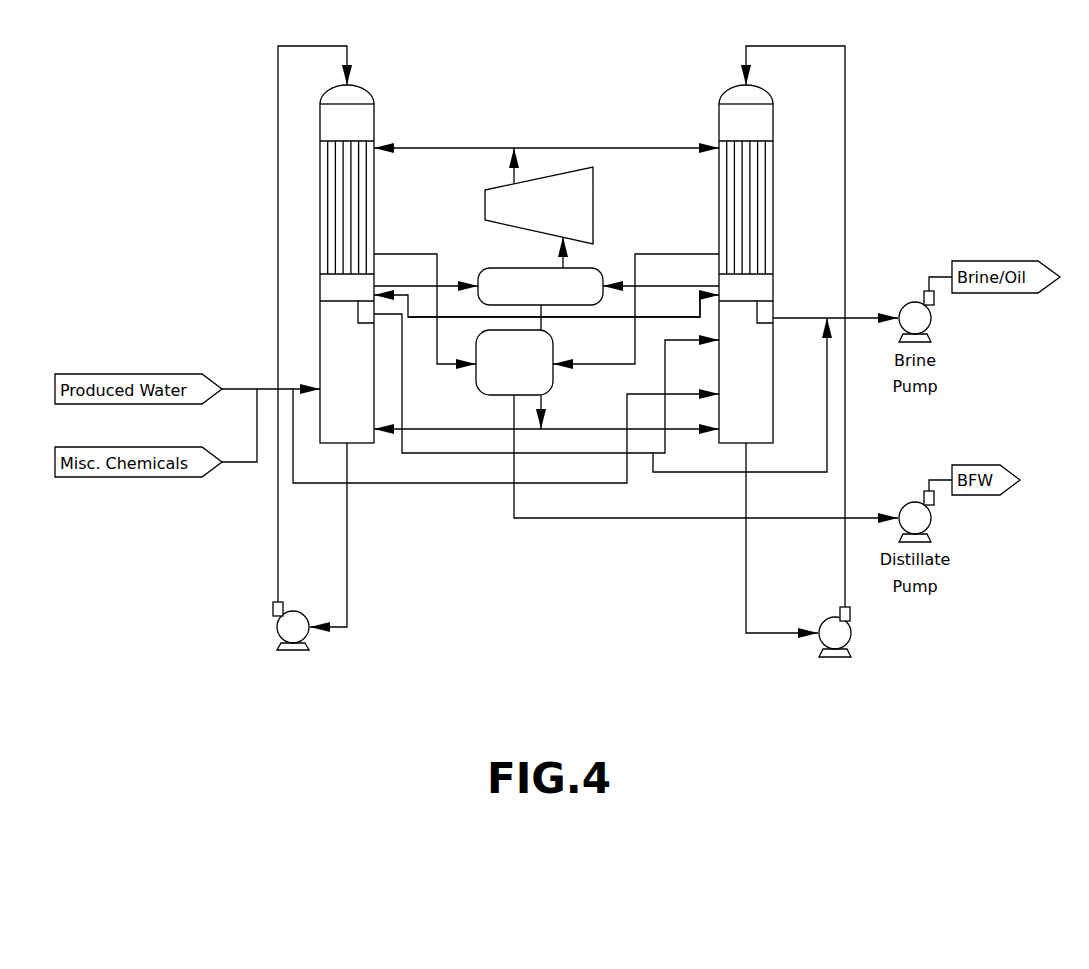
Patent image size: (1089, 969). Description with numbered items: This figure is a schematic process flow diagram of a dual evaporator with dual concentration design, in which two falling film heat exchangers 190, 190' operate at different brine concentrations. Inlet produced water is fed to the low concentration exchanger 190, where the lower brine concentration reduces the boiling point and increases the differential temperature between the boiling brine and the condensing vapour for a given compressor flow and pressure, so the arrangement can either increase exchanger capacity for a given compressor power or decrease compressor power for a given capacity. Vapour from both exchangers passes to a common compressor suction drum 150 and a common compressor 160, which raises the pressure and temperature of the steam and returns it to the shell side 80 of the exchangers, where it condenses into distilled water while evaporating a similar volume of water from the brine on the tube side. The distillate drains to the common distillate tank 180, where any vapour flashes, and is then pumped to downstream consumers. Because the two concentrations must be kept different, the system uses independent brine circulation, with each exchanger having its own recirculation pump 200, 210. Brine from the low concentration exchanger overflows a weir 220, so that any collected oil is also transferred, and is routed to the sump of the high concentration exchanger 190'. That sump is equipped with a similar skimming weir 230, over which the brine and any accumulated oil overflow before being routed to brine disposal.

The shell side 80 is at (546, 132).
The compressor suction drum 150 is at (498, 270).
The compressor 160 is at (540, 192).
The distillate tank 180 is at (493, 383).
The low concentration exchanger 190 is at (347, 264).
The high concentration exchanger 190' is at (746, 264).
The recirculation pump 200 is at (273, 609).
The recirculation pump 210 is at (852, 621).
The weir 220 is at (355, 307).
The skimming weir 230 is at (760, 312).